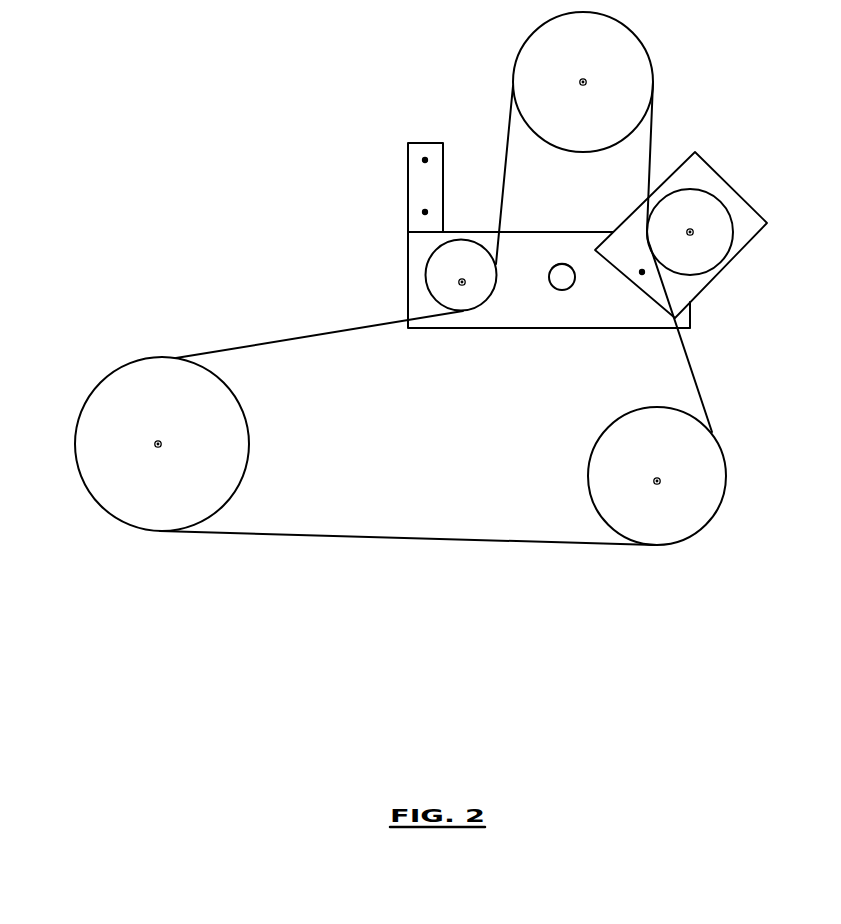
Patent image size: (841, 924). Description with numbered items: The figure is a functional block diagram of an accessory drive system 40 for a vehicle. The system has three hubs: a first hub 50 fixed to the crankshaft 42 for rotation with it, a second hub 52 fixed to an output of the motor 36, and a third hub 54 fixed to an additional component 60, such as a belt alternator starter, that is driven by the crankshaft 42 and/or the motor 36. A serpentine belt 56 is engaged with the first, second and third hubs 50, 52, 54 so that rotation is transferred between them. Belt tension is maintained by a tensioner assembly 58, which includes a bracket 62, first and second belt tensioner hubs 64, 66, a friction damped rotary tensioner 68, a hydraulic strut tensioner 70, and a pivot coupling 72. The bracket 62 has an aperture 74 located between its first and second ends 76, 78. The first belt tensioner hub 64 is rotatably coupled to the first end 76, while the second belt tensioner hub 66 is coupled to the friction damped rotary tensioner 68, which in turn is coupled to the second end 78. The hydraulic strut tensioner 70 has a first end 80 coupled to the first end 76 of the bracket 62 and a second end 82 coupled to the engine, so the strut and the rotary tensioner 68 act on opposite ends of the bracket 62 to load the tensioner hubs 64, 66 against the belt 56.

The motor 36 is at (583, 82).
The accessory drive system 40 is at (262, 150).
The crankshaft 42 is at (158, 444).
The first hub 50 is at (250, 440).
The second hub 52 is at (553, 145).
The third hub 54 is at (588, 473).
The serpentine belt 56 is at (310, 336).
The tensioner assembly 58 is at (350, 168).
The additional component 60 is at (657, 481).
The bracket 62 is at (492, 328).
The first belt tensioner hub 64 is at (425, 278).
The second belt tensioner hub 66 is at (690, 188).
The friction damped rotary tensioner 68 is at (732, 263).
The hydraulic strut tensioner 70 is at (443, 168).
The pivot coupling 72 is at (565, 275).
The aperture 74 is at (567, 264).
The first end 76 is at (408, 258).
The second end 78 is at (692, 315).
The first end 80 is at (443, 205).
The second end 82 is at (407, 157).